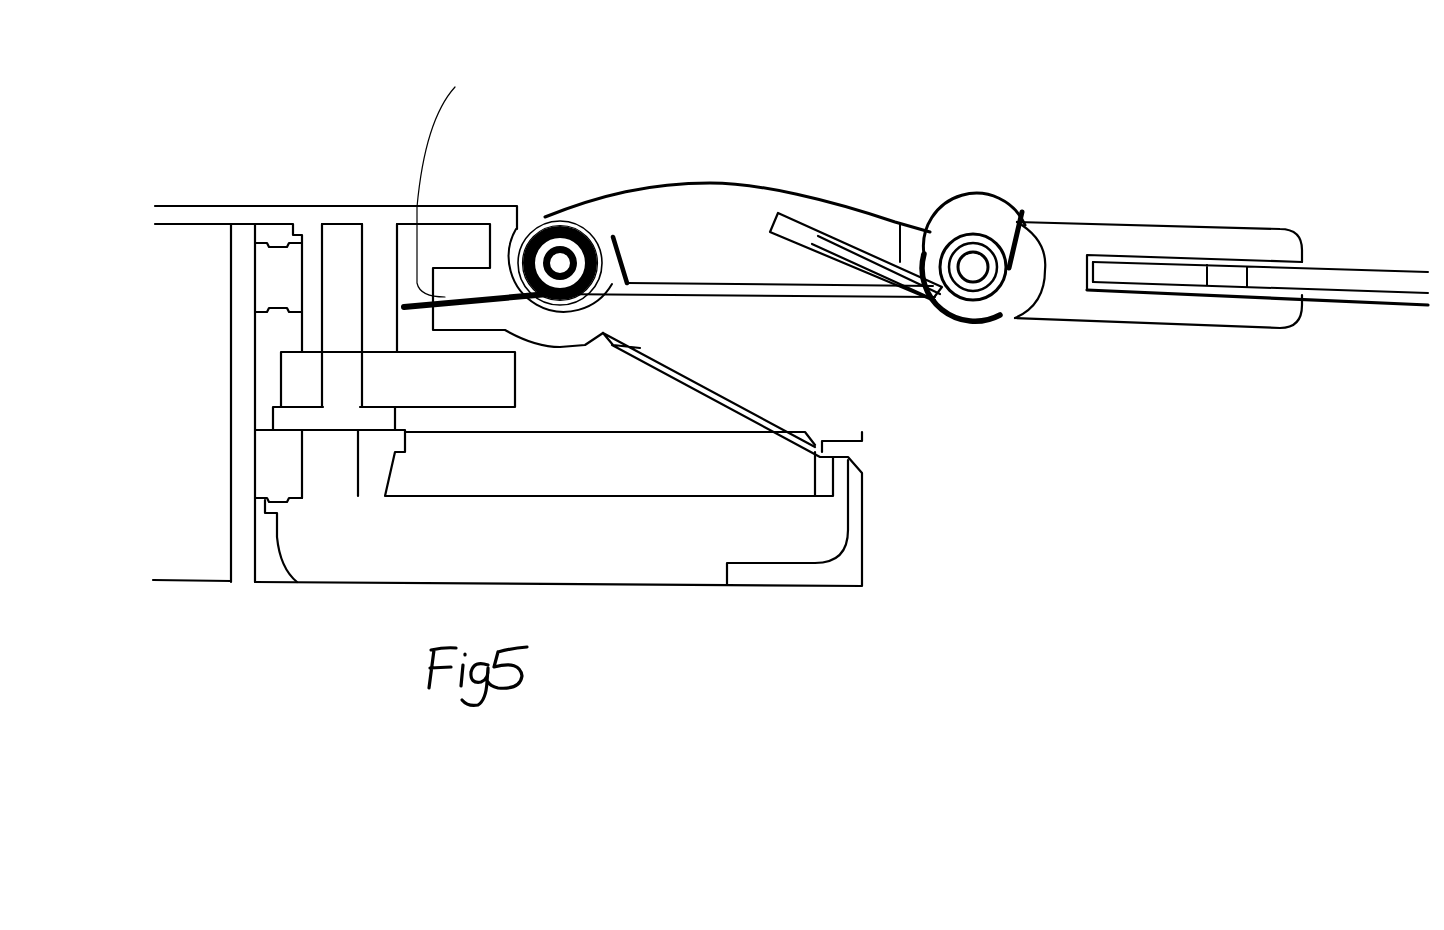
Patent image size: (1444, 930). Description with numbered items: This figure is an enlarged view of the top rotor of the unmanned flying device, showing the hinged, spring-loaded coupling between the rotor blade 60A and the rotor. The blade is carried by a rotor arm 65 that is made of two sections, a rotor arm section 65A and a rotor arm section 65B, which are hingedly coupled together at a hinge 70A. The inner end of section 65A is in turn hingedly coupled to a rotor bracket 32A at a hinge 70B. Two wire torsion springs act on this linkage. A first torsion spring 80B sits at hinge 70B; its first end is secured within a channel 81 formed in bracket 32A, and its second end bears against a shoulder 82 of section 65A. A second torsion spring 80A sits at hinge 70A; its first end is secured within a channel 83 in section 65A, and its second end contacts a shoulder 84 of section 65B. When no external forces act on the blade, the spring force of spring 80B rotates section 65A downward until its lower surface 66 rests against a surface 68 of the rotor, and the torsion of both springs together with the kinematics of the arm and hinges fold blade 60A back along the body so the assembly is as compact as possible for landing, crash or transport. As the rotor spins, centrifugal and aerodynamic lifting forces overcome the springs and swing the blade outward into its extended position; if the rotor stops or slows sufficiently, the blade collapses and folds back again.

The rotor bracket 32A is at (385, 195).
The channel 81 is at (459, 180).
The first torsion spring 80B is at (524, 240).
The hinge 70B is at (547, 207).
The rotor arm section 65A is at (676, 181).
The rotor arm 65 is at (853, 234).
The hinge 70A is at (969, 204).
The shoulder 84 is at (1034, 211).
The rotor arm section 65B is at (1153, 213).
The shoulder 82 is at (617, 232).
The channel 83 is at (841, 268).
The second torsion spring 80A is at (987, 316).
The lower surface 66 is at (823, 302).
The surface 68 is at (770, 298).
The rotor blade 60A is at (1360, 320).